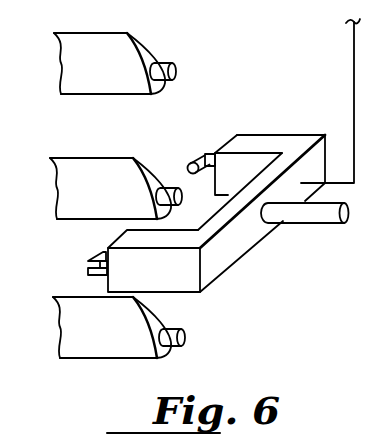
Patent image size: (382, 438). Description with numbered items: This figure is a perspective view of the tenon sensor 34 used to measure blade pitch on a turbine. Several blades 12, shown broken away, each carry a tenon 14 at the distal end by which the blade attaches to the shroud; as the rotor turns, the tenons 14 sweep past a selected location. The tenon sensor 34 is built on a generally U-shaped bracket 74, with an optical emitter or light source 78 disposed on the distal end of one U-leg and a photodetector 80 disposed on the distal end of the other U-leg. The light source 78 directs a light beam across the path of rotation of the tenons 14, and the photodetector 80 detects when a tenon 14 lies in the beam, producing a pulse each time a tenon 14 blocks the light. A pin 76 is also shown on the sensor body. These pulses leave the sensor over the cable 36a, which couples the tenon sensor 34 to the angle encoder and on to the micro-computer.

The blade 12 is at (93, 63).
The tenon 14 is at (171, 189).
The tenon sensor 34 is at (263, 267).
The cable 36a is at (353, 65).
The U-shaped bracket 74 is at (211, 270).
The pin 76 is at (323, 213).
The optical emitter 78 is at (89, 261).
The photodetector 80 is at (192, 161).